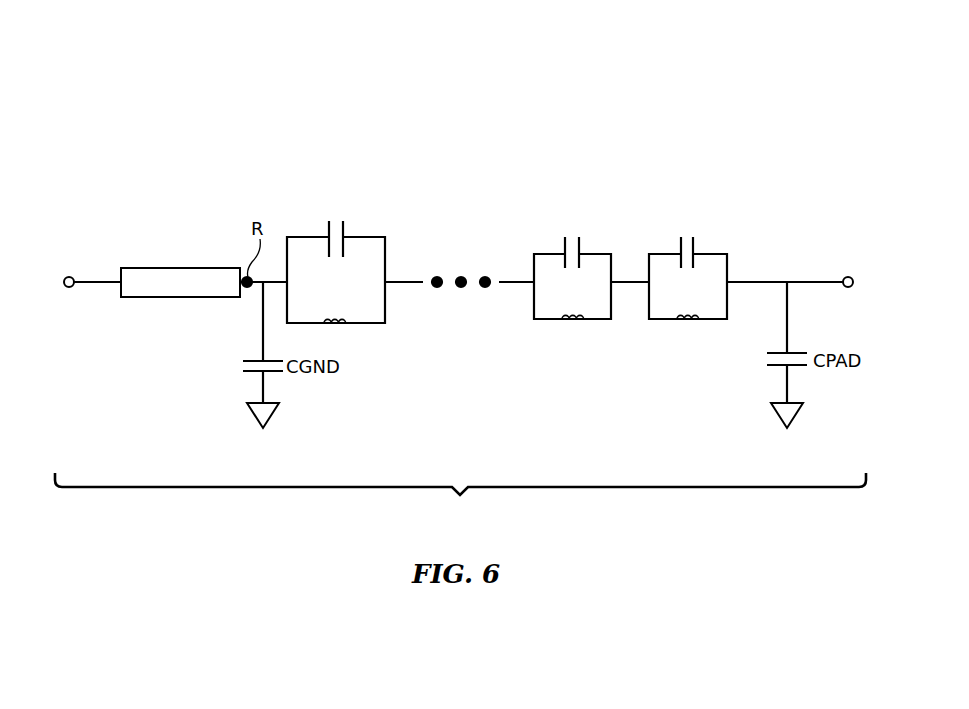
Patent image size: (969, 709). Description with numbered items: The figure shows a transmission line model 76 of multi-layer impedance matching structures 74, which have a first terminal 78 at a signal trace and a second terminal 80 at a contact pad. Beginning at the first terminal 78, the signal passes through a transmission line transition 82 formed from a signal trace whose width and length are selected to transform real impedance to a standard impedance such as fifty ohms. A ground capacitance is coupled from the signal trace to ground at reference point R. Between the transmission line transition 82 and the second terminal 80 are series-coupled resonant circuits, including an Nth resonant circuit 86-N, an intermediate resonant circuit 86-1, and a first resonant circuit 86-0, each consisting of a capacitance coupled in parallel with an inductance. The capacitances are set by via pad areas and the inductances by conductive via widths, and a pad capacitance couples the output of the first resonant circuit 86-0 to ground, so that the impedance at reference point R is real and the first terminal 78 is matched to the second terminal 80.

The multi-layer impedance matching structures 74 is at (460, 499).
The transmission line model 76 is at (474, 60).
The first terminal 78 is at (69, 277).
The second terminal 80 is at (848, 277).
The transmission line transition 82 is at (183, 268).
The Nth resonant circuit 86-N is at (388, 194).
The resonant circuit 86-1 is at (568, 199).
The first resonant circuit 86-0 is at (696, 199).